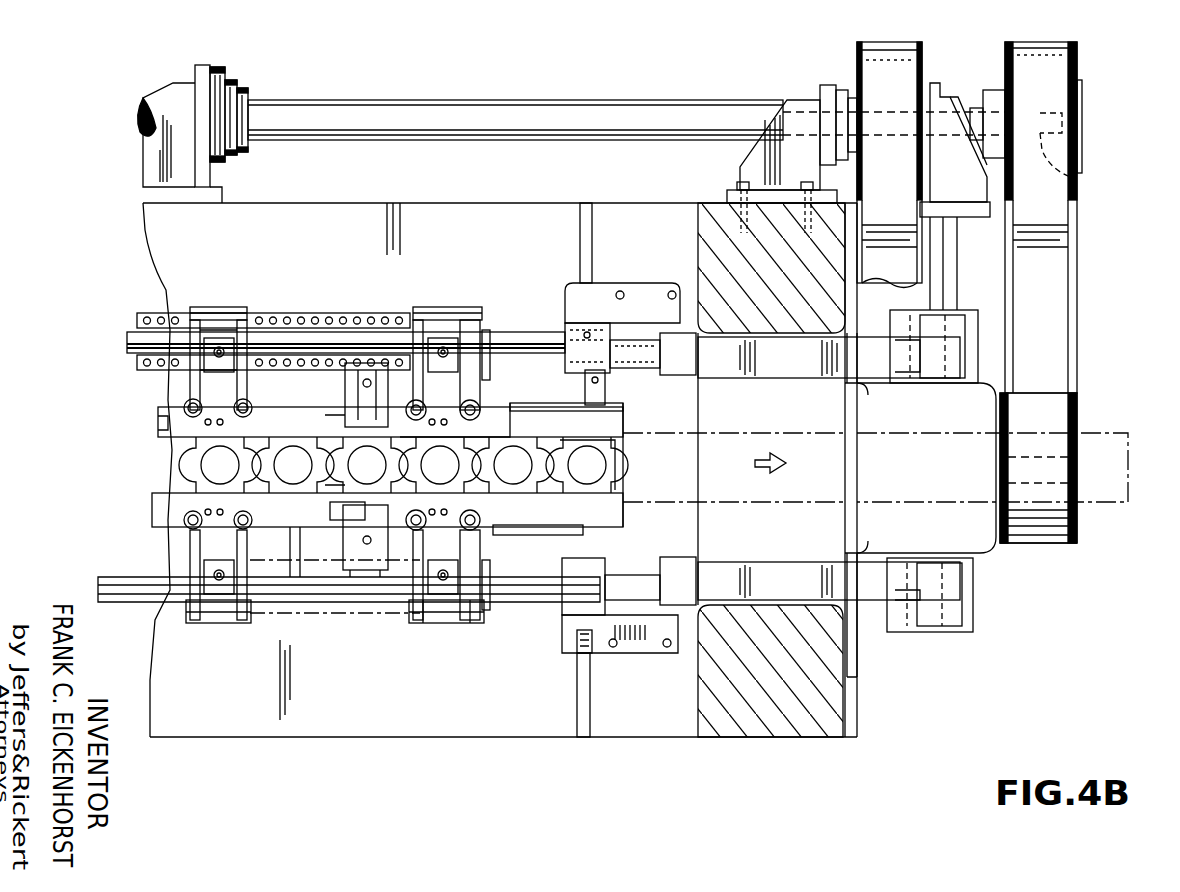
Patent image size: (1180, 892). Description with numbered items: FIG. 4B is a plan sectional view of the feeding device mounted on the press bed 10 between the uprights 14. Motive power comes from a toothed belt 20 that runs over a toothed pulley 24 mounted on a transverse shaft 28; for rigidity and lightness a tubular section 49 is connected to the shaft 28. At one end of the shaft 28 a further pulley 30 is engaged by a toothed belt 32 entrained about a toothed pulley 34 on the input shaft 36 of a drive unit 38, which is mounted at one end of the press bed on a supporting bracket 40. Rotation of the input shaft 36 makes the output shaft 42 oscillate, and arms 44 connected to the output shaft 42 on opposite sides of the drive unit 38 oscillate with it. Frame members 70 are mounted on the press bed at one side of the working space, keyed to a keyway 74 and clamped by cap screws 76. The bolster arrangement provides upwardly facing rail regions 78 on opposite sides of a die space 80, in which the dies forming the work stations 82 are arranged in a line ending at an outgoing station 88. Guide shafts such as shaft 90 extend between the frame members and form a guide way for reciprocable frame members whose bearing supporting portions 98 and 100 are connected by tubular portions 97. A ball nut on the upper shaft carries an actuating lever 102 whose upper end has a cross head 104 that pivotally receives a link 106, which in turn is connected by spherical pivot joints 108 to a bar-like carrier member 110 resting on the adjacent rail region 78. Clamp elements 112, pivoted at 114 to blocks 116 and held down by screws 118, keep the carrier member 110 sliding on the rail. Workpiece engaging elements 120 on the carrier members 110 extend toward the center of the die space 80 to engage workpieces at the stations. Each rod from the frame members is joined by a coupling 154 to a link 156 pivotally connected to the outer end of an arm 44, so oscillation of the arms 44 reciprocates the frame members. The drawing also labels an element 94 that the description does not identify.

The bed 10 is at (330, 725).
The uprights 14 is at (713, 215).
The toothed belt 20 is at (880, 50).
The toothed pulley 24 is at (925, 70).
The shaft 28 is at (1078, 178).
The further pulley 30 is at (1082, 70).
The toothed belt 32 is at (1063, 262).
The toothed pulley 34 is at (1075, 543).
The input shaft 36 is at (1050, 470).
The drive unit 38 is at (985, 545).
The supporting bracket 40 is at (862, 385).
The output shaft 42 is at (930, 383).
The arms 44 is at (905, 345).
The tubular section 49 is at (474, 100).
The frame members 70 is at (642, 280).
The keyway 74 is at (588, 230).
The cap screws 76 is at (640, 655).
The rail regions 78 is at (165, 420).
The die space 80 is at (483, 472).
The work stations 82 is at (200, 465).
The outgoing station 88 is at (606, 470).
The shaft 90 is at (130, 345).
The chain 94 is at (137, 312).
The tubular portions 97 is at (245, 365).
The bearing supporting portion 98 is at (472, 310).
The bearing supporting portion 100 is at (219, 335).
The actuating lever 102 is at (215, 310).
The cross head 104 is at (440, 642).
The link 106 is at (200, 382).
The spherical pivot joints 108 is at (472, 527).
The carrier member 110 is at (612, 422).
The clamp elements 112 is at (345, 332).
The pivot 114 is at (352, 548).
The blocks 116 is at (367, 368).
The screws 118 is at (358, 395).
The workpiece engaging elements 120 is at (345, 502).
The coupling 154 is at (640, 300).
The link 156 is at (800, 365).